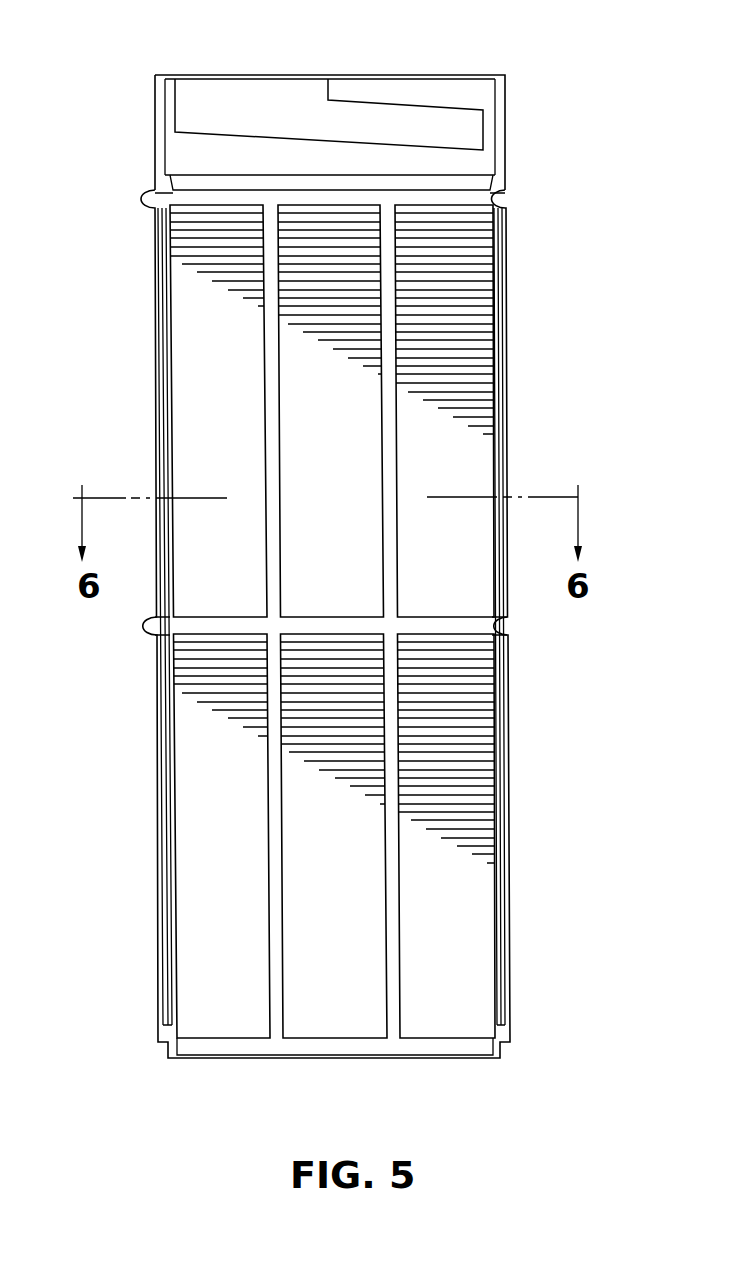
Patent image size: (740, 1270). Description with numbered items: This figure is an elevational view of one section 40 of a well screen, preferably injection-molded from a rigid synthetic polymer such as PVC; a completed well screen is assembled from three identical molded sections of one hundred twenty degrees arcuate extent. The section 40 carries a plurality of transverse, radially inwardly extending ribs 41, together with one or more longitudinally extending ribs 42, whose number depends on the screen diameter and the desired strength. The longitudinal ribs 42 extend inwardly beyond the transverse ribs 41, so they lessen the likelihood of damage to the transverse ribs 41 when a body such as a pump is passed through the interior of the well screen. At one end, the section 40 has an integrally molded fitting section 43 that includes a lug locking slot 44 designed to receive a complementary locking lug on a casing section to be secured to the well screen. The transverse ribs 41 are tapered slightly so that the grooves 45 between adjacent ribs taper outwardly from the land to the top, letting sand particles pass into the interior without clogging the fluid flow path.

The well screen section 40 is at (524, 637).
The transverse ribs 41 is at (498, 271).
The longitudinal ribs 42 is at (385, 247).
The fitting section 43 is at (140, 157).
The lug locking slot 44 is at (355, 125).
The grooves 45 is at (465, 350).